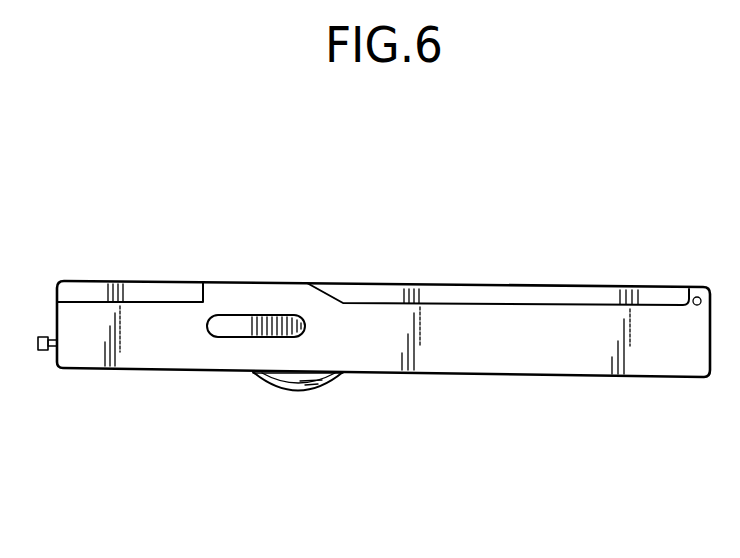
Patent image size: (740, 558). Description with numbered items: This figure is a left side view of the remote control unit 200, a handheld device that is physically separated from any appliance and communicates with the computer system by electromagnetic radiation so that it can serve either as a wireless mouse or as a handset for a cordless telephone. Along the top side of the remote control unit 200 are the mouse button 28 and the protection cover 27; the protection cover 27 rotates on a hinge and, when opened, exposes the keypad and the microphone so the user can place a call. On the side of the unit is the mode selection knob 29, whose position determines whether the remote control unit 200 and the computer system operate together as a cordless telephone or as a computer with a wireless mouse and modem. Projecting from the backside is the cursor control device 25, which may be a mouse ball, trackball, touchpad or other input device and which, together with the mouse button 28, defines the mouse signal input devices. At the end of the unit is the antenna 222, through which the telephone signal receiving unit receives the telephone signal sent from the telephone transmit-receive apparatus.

The remote control unit 200 is at (552, 112).
The protection cover 27 is at (530, 290).
The mouse button 28 is at (105, 290).
The mode selection knob 29 is at (272, 338).
The cursor control device 25 is at (308, 384).
The antenna 222 is at (45, 355).